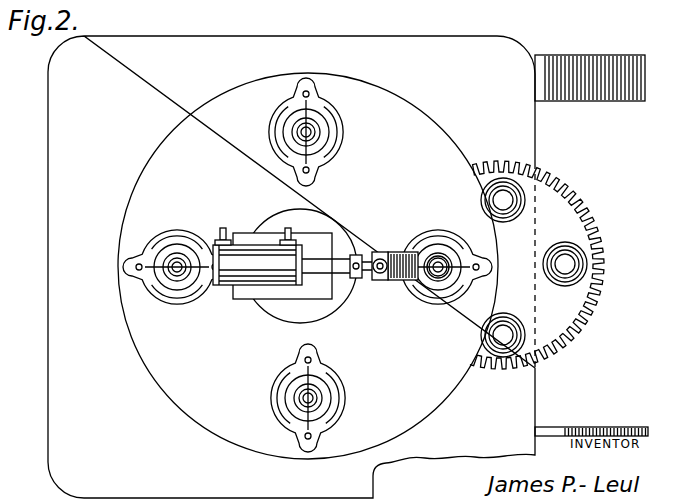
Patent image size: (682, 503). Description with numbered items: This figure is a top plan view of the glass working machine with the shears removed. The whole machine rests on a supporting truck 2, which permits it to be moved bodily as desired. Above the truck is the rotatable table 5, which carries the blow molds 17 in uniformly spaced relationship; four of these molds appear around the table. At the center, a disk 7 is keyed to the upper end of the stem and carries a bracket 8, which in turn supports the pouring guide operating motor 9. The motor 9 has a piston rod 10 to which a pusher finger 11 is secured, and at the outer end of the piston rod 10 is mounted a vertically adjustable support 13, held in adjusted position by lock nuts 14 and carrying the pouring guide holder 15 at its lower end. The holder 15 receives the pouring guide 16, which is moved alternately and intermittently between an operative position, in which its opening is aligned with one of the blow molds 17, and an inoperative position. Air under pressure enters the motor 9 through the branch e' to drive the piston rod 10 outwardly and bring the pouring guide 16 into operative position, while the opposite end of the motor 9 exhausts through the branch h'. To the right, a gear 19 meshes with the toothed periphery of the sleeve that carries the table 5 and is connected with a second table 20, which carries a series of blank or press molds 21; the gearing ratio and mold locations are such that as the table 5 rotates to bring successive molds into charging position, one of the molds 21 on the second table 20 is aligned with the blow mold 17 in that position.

The supporting truck 2 is at (348, 267).
The table 5 is at (446, 148).
The disk 7 is at (340, 299).
The bracket 8 is at (306, 299).
The pouring guide operating motor 9 is at (262, 286).
The branch e' is at (226, 221).
The branch h' is at (276, 221).
The piston rod 10 is at (337, 259).
The pusher finger 11 is at (357, 257).
The vertically adjustable support 13 is at (380, 281).
The lock nuts 14 is at (384, 258).
The pouring guide holder 15 is at (407, 282).
The pouring guide 16 is at (438, 282).
The blow molds 17 is at (340, 132).
The gear 19 is at (589, 221).
The second table 20 is at (560, 314).
The blank or press molds 21 is at (510, 194).